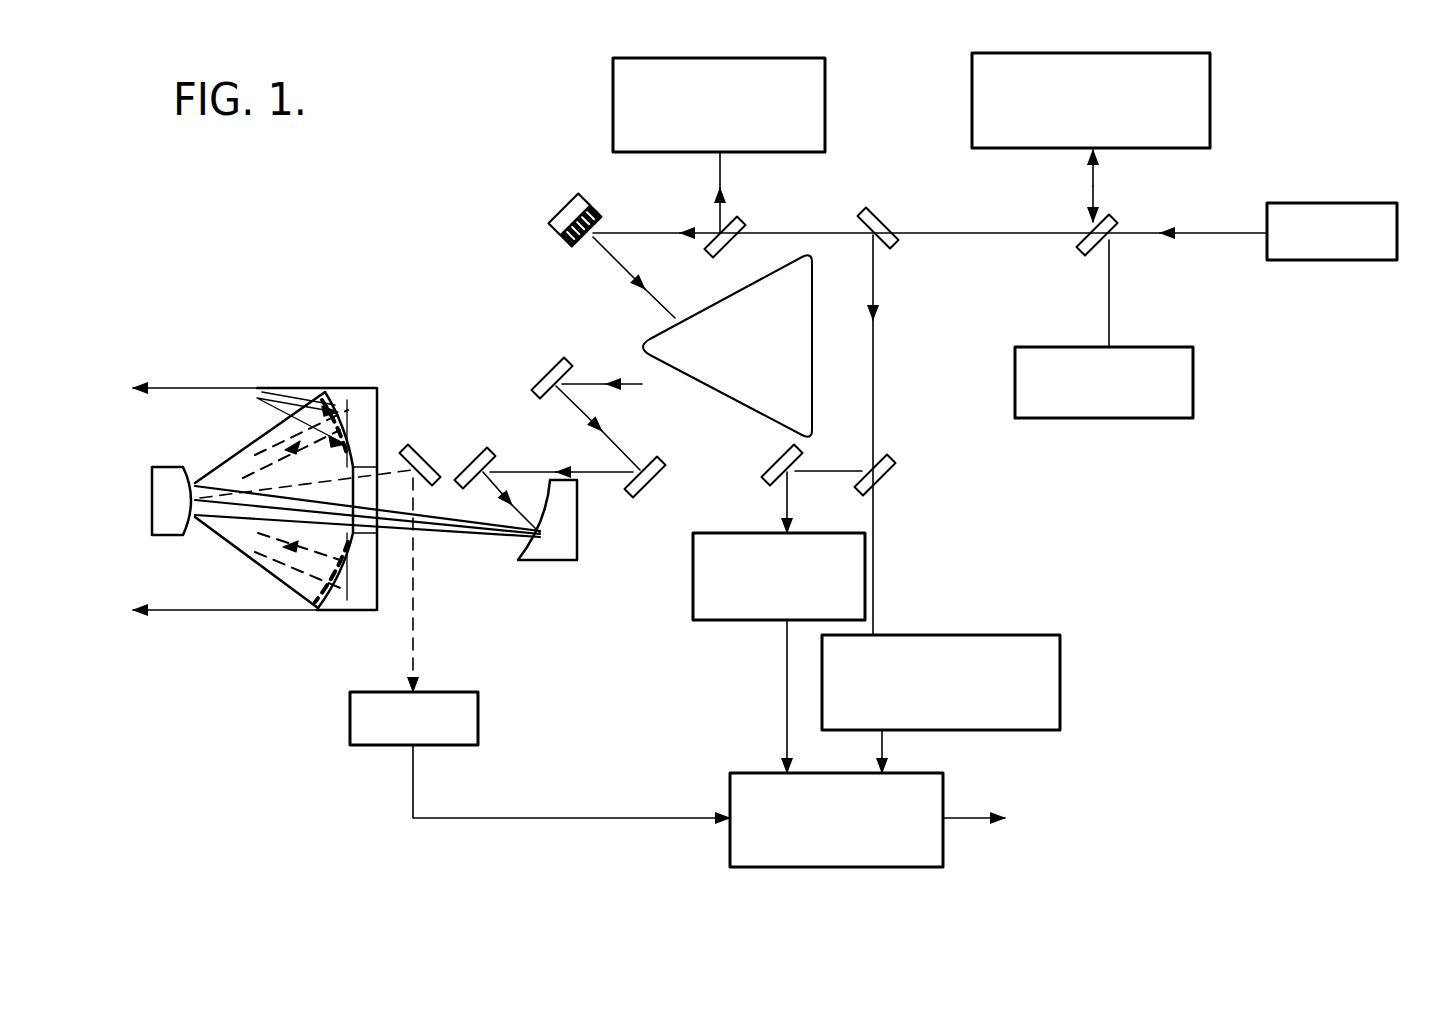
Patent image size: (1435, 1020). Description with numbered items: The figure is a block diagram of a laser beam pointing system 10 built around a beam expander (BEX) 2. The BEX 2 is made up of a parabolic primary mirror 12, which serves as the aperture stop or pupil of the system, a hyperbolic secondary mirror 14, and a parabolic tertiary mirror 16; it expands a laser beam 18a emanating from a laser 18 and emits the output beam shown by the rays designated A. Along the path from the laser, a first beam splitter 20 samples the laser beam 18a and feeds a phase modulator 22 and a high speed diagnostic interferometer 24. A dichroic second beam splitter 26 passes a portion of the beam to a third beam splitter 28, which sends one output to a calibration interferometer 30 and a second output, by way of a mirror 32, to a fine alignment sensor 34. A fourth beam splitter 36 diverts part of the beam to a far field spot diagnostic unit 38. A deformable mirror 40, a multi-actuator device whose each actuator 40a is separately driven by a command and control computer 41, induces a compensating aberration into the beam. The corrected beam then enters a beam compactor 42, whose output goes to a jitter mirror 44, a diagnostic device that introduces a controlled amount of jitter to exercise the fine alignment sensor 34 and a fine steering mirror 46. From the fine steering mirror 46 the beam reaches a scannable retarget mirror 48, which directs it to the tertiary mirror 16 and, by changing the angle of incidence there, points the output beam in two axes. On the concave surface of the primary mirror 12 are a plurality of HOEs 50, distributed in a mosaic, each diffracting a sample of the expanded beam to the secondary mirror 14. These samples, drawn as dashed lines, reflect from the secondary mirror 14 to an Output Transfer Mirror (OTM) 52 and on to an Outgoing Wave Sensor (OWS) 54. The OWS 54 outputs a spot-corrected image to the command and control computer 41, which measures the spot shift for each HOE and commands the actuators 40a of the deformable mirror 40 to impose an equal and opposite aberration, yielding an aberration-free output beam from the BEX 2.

The beam expander (BEX) 2 is at (505, 648).
The laser beam pointing system 10 is at (400, 226).
The parabolic primary mirror 12 is at (358, 612).
The hyperbolic secondary mirror 14 is at (183, 536).
The parabolic tertiary mirror 16 is at (577, 500).
The laser 18 is at (1266, 262).
The laser beam 18a is at (615, 470).
The first beam splitter 20 is at (1086, 252).
The phase modulator 22 is at (1193, 347).
The high speed diagnostic interferometer 24 is at (1207, 150).
The second beam splitter (dichroic) 26 is at (885, 214).
The third beam splitter 28 is at (862, 496).
The calibration interferometer 30 is at (1060, 635).
The mirror 32 is at (768, 466).
The fine alignment sensor 34 is at (693, 622).
The fourth beam splitter 36 is at (733, 246).
The far field spot diagnostic unit 38 is at (613, 95).
The deformable mirror 40 is at (588, 250).
The actuator 40a is at (556, 211).
The command and control computer 41 is at (730, 773).
The beam compactor 42 is at (812, 340).
The jitter mirror 44 is at (550, 367).
The fine steering mirror 46 is at (657, 485).
The retarget mirror 48 is at (473, 456).
The HOEs 50 is at (257, 398).
The Output Transfer Mirror (OTM) 52 is at (432, 460).
The Outgoing Wave Sensor (OWS) 54 is at (478, 747).